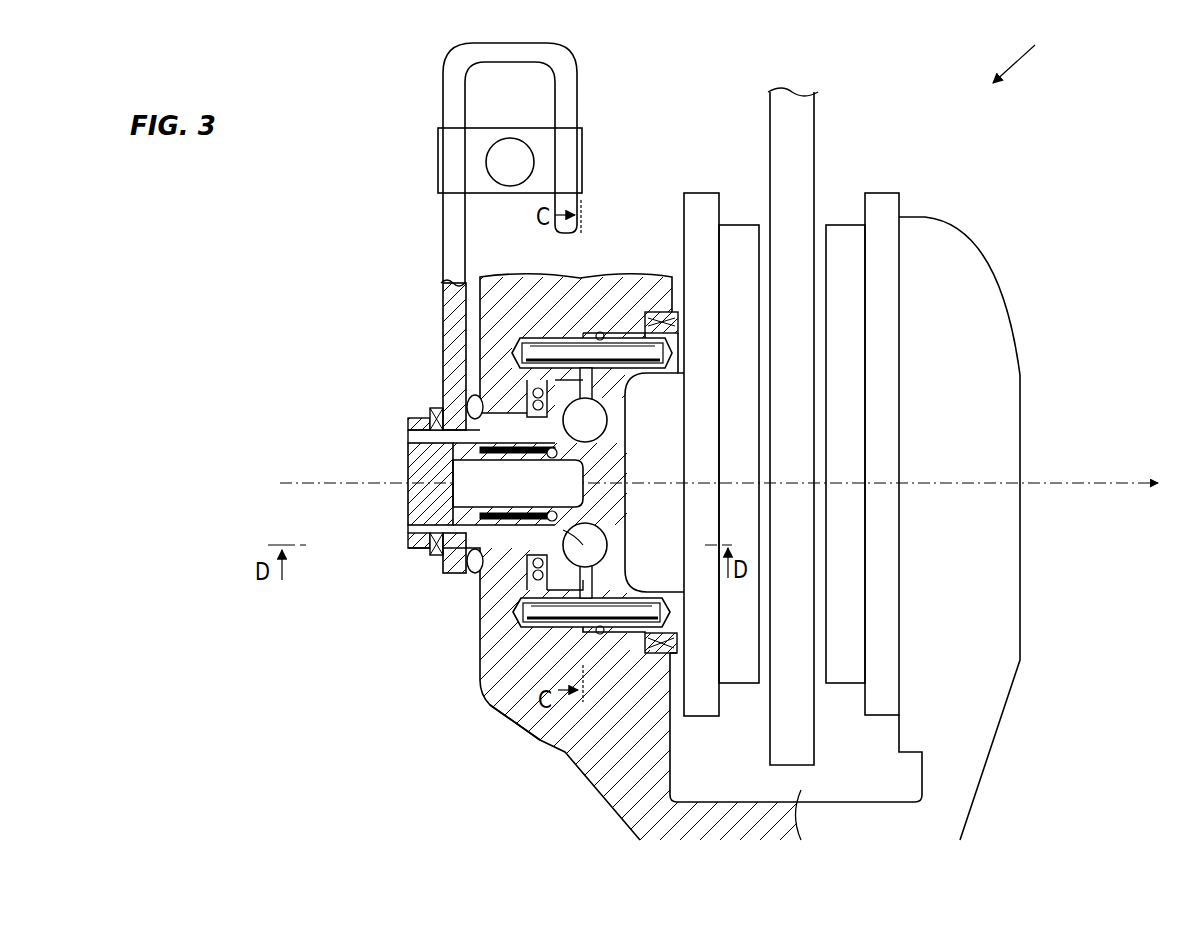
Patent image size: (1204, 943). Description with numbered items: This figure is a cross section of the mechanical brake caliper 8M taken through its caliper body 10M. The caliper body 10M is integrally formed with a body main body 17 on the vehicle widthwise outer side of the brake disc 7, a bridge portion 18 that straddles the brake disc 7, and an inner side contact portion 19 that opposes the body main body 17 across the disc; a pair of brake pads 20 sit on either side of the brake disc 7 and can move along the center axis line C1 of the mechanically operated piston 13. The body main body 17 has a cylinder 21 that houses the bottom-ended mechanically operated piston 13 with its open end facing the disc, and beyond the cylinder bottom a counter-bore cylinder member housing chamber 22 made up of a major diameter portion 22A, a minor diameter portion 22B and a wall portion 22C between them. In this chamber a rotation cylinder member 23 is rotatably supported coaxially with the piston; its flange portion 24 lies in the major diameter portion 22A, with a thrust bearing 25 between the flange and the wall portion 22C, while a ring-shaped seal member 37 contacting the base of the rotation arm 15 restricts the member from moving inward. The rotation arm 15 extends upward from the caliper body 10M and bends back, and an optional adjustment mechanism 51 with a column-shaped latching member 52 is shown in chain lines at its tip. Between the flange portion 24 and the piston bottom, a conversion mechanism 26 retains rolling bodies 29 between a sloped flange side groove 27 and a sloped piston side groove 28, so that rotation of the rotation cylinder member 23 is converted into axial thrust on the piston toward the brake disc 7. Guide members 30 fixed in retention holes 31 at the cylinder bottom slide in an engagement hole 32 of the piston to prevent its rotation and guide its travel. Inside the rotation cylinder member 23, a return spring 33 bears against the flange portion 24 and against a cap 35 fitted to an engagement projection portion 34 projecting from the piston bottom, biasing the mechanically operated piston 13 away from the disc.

The brake disc 7 is at (800, 118).
The mechanical brake caliper 8M is at (1033, 52).
The caliper body 10M is at (538, 744).
The mechanically operated piston 13 is at (637, 333).
The rotation arm 15 is at (440, 303).
The body main body 17 is at (483, 655).
The bridge portion 18 is at (645, 806).
The inner side contact portion 19 is at (1000, 668).
The brake pads 20 is at (740, 235).
The cylinder 21 is at (603, 332).
The cylinder member housing chamber 22 is at (357, 593).
The major diameter portion 22A is at (515, 598).
The minor diameter portion 22B is at (458, 577).
The wall portion 22C is at (497, 398).
The rotation cylinder member 23 is at (520, 388).
The flange portion 24 is at (540, 382).
The thrust bearing 25 is at (527, 345).
The conversion mechanism 26 is at (617, 402).
The flange side groove 27 is at (540, 586).
The piston side groove 28 is at (597, 552).
The rolling bodies 29 is at (598, 432).
The guide members 30 is at (612, 338).
The retention holes 31 is at (552, 338).
The engagement hole 32 is at (660, 312).
The return spring 33 is at (480, 448).
The engagement projection portion 34 is at (455, 497).
The cap 35 is at (406, 466).
The seal member 37 is at (466, 403).
The adjustment mechanism 51 is at (438, 150).
The latching member 52 is at (533, 129).
The center axis line C1 is at (290, 482).